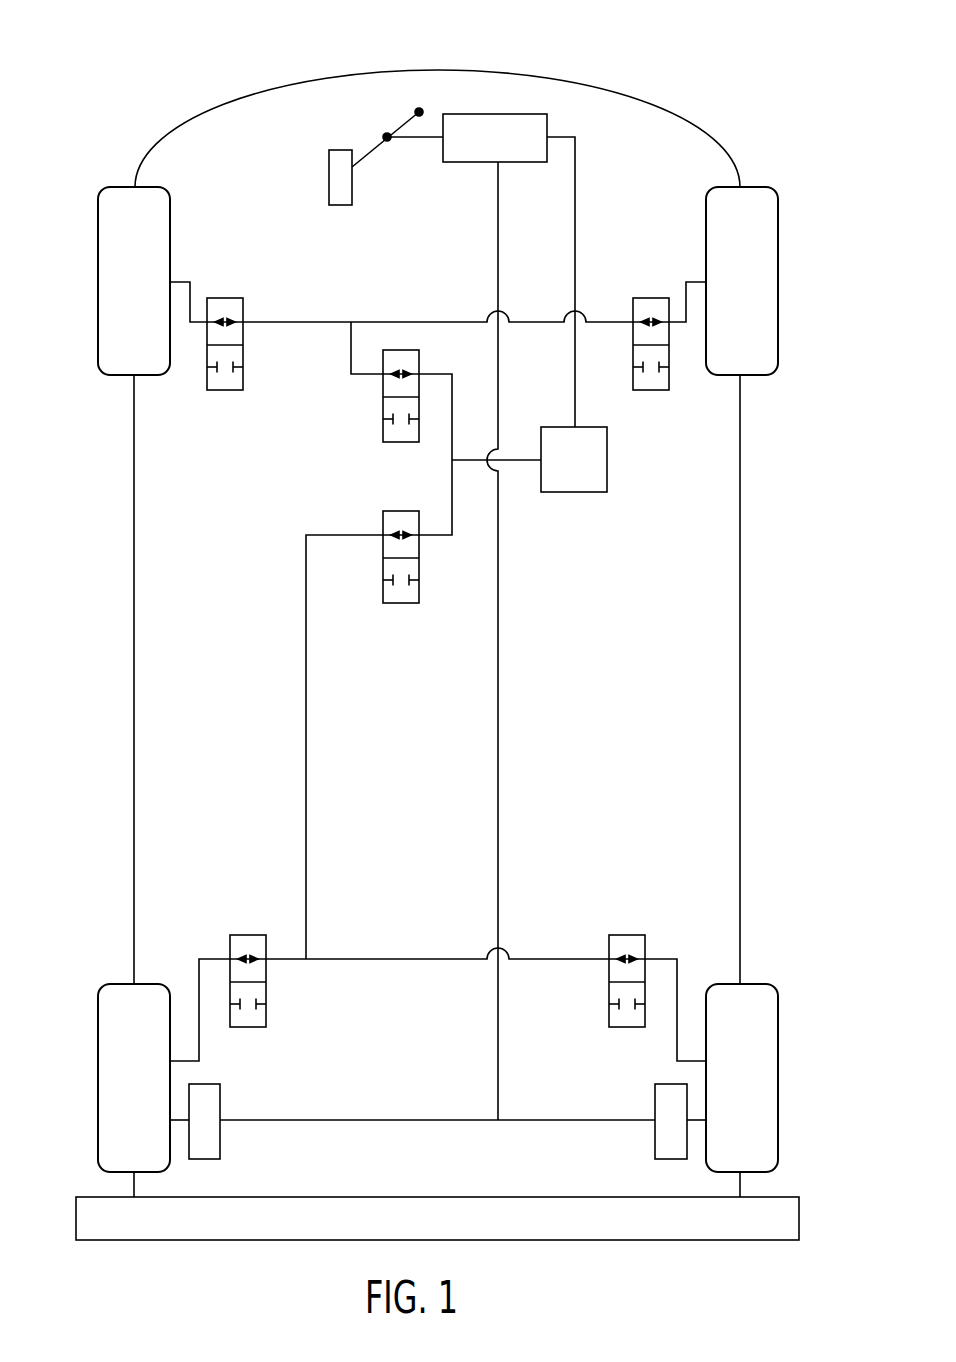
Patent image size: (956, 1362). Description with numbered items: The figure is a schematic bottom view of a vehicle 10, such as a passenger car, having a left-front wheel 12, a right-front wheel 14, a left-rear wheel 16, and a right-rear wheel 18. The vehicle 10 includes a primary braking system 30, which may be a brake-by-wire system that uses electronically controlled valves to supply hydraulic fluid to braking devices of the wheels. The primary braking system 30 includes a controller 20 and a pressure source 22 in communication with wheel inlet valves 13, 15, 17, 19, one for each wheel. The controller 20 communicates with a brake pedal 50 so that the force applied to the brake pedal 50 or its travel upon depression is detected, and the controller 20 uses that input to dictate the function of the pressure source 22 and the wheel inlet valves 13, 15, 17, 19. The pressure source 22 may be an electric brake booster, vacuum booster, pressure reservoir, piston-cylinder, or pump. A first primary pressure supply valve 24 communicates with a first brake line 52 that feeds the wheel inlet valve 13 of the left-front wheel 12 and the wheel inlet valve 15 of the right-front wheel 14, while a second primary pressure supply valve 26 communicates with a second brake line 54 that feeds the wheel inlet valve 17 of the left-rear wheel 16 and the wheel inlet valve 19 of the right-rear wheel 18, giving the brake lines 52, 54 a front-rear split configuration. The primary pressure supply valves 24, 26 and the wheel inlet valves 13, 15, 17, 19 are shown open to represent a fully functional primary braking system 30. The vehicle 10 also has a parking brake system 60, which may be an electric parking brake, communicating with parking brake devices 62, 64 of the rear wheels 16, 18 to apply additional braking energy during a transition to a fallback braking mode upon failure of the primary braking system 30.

The vehicle 10 is at (103, 74).
The left-front wheel 12 is at (98, 256).
The wheel inlet valve 13 is at (224, 298).
The right-front wheel 14 is at (778, 256).
The wheel inlet valve 15 is at (654, 298).
The left-rear wheel 16 is at (98, 1068).
The wheel inlet valve 17 is at (249, 935).
The right-rear wheel 18 is at (778, 1068).
The wheel inlet valve 19 is at (626, 935).
The controller 20 is at (504, 152).
The pressure source 22 is at (583, 473).
The first primary pressure supply valve 24 is at (392, 442).
The second primary pressure supply valve 26 is at (396, 603).
The primary braking system 30 is at (248, 215).
The brake pedal 50 is at (339, 150).
The first brake line 52 is at (440, 320).
The second brake line 54 is at (397, 957).
The parking brake system 60 is at (456, 1146).
The parking brake device 62 is at (220, 1101).
The parking brake device 64 is at (655, 1108).